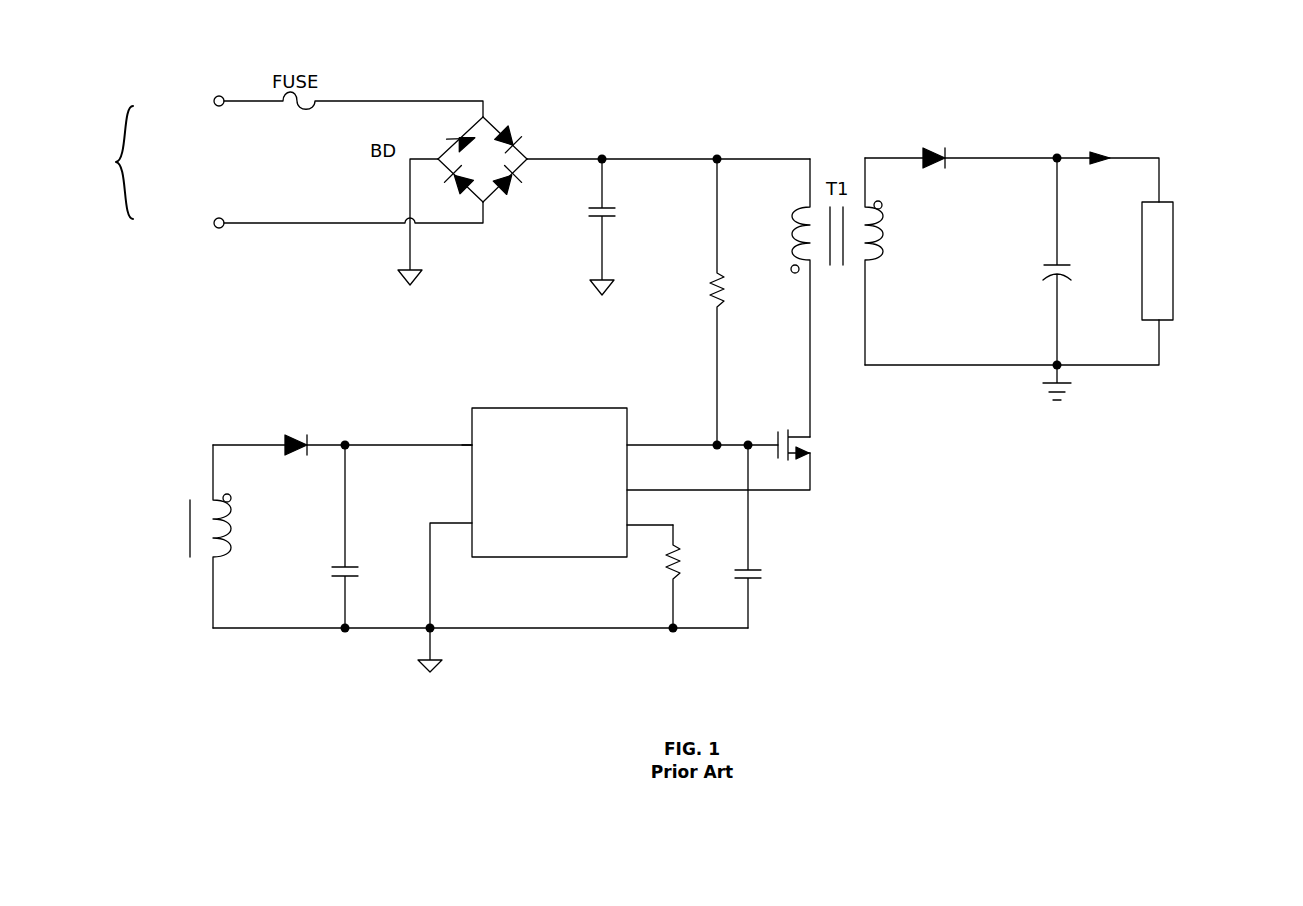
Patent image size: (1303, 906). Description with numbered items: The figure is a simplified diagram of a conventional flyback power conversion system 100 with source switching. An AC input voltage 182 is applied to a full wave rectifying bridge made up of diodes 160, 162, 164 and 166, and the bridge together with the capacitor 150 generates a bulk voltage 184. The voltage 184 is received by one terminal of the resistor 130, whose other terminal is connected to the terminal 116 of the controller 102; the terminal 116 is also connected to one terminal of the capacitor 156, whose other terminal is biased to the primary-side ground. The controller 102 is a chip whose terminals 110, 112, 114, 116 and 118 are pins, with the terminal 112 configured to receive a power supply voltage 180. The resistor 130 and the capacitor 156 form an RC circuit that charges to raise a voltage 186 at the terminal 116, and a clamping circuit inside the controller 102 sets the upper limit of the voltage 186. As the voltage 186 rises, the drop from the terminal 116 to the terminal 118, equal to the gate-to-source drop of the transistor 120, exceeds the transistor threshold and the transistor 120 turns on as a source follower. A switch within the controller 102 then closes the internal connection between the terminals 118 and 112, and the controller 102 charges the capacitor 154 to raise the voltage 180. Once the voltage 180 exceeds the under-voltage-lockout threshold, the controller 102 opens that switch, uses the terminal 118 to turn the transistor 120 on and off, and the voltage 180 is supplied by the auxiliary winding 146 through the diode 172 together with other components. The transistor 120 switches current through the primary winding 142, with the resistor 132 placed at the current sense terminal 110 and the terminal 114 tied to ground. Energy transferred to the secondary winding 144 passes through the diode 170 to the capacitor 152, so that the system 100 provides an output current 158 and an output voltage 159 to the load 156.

The power conversion system 100 is at (1226, 98).
The controller 102 is at (522, 558).
The terminal 110 is at (630, 528).
The terminal 112 is at (468, 448).
The terminal 114 is at (469, 530).
The terminal 116 is at (630, 440).
The terminal 118 is at (630, 487).
The transistor 120 is at (801, 437).
The resistor 130 is at (721, 305).
The resistor 132 is at (680, 545).
The primary winding 142 is at (812, 262).
The secondary winding 144 is at (866, 206).
The auxiliary winding 146 is at (227, 552).
The capacitor 150 is at (618, 221).
The capacitor 152 is at (1062, 264).
The capacitor 154 is at (343, 565).
The capacitor 156 is at (1174, 208).
The output current 158 is at (1108, 167).
The output voltage 159 is at (1057, 154).
The diode 160 is at (455, 184).
The diode 162 is at (450, 139).
The diode 164 is at (497, 140).
The diode 166 is at (504, 185).
The diode 170 is at (933, 164).
The diode 172 is at (298, 454).
The power supply voltage 180 is at (380, 445).
The AC input voltage 182 is at (147, 161).
The voltage 184 is at (721, 165).
The voltage 186 is at (700, 441).